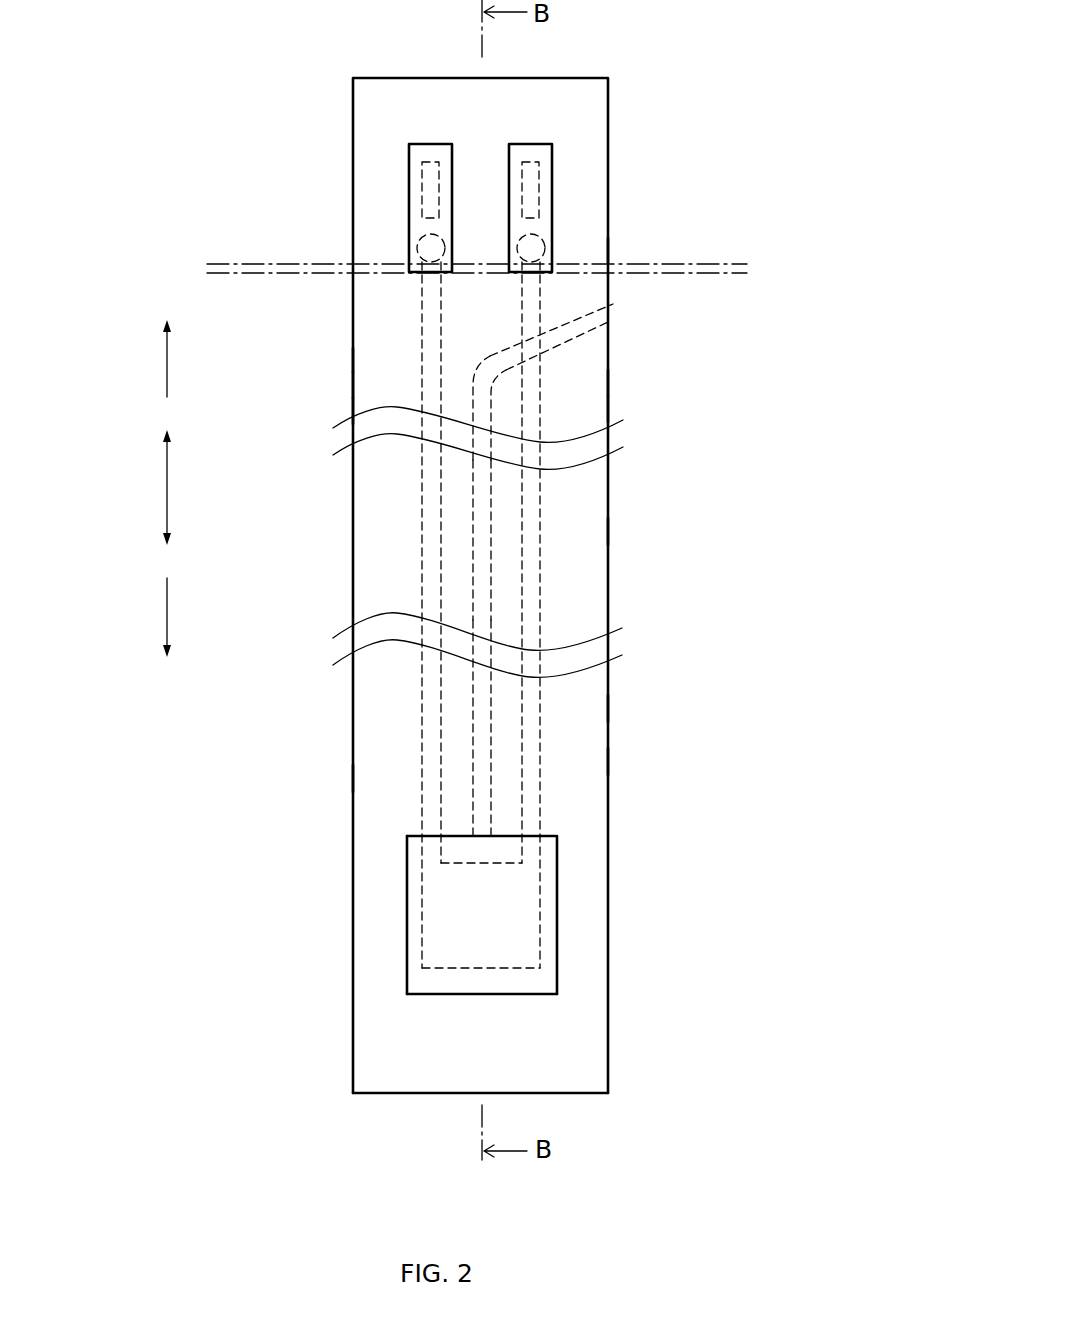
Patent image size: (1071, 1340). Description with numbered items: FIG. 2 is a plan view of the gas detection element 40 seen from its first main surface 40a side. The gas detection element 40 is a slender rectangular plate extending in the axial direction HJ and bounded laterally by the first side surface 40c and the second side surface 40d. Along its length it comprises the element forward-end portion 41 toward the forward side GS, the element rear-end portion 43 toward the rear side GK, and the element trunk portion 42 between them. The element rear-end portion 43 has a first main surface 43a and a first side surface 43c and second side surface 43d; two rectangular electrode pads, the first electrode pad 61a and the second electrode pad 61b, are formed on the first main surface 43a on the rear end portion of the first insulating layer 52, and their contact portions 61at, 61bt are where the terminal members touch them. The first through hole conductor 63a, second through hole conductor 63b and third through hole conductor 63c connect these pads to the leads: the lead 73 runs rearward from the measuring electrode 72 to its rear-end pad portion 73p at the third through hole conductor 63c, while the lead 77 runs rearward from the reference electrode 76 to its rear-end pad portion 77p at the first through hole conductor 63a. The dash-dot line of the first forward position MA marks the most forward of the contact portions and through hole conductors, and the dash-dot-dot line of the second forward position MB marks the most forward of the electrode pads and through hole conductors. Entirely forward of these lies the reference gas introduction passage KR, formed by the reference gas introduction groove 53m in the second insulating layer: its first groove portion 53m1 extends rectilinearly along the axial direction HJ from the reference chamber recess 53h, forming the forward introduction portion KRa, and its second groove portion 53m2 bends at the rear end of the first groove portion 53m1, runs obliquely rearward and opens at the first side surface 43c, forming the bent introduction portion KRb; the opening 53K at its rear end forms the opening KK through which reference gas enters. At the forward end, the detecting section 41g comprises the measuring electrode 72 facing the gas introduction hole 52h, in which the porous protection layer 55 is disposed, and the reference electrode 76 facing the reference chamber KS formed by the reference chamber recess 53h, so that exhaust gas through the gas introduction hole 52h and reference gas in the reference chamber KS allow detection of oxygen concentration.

The gas detection element 40 is at (676, 73).
The first main surface 40a is at (582, 762).
The first side surface 40c is at (608, 708).
The second side surface 40d is at (353, 778).
The element forward-end portion 41 is at (585, 910).
The detecting section 41g is at (447, 892).
The element trunk portion 42 is at (588, 532).
The element rear-end portion 43 is at (583, 250).
The first main surface 43a is at (377, 362).
The first side surface 43c is at (608, 383).
The second side surface 43d is at (353, 385).
The first insulating layer 52 is at (570, 1038).
The gas introduction hole 52h is at (592, 976).
The reference chamber recess 53h is at (540, 994).
The opening 53K is at (613, 304).
The reference gas introduction groove 53m is at (473, 527).
The first groove portion 53m1 is at (477, 728).
The second groove portion 53m2 is at (578, 337).
The protection layer 55 is at (427, 980).
The first electrode pad 61a is at (418, 173).
The contact portion 61at is at (430, 160).
The second electrode pad 61b is at (545, 170).
The contact portion 61bt is at (532, 160).
The first through hole conductor 63a is at (343, 228).
The second through hole conductor 63b is at (343, 228).
The third through hole conductor 63c is at (638, 216).
The measuring electrode 72 is at (586, 863).
The lead 73 is at (540, 408).
The rear-end pad portion 73p is at (538, 227).
The reference electrode 76 is at (540, 880).
The lead 77 is at (420, 395).
The rear-end pad portion 77p is at (418, 242).
The reference gas introduction passage KR is at (496, 615).
The forward introduction portion KRa is at (505, 581).
The bent introduction portion KRb is at (495, 345).
The opening KK is at (620, 314).
The reference chamber KS is at (511, 944).
The first forward position MA is at (734, 260).
The second forward position MB is at (734, 278).
The rear side GK is at (149, 358).
The axial direction HJ is at (149, 487).
The forward side GS is at (149, 617).